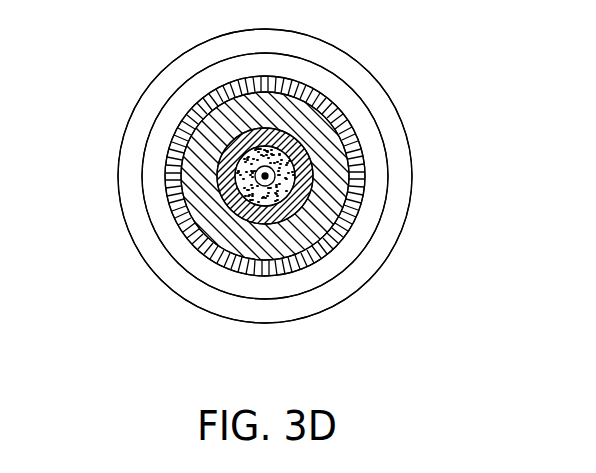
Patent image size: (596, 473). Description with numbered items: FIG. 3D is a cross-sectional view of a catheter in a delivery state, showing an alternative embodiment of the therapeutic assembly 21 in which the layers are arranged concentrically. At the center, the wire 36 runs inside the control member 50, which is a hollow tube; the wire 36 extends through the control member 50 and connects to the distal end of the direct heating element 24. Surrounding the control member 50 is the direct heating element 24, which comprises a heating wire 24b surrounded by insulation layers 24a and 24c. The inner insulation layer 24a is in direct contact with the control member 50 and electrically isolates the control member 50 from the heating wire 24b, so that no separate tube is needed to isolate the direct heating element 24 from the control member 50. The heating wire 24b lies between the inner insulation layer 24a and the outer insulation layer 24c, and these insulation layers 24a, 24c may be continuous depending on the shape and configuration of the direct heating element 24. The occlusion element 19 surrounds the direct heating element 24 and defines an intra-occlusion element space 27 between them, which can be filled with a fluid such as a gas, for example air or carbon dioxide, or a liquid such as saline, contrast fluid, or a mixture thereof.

The therapeutic assembly 21 is at (68, 92).
The occlusion element 19 is at (157, 252).
The intra-occlusion element space 27 is at (153, 187).
The direct heating element 24 is at (362, 191).
The insulation layer 24a is at (305, 192).
The heating wire 24b is at (323, 221).
The insulation layer 24c is at (332, 247).
The control member 50 is at (292, 183).
The wire 36 is at (277, 174).